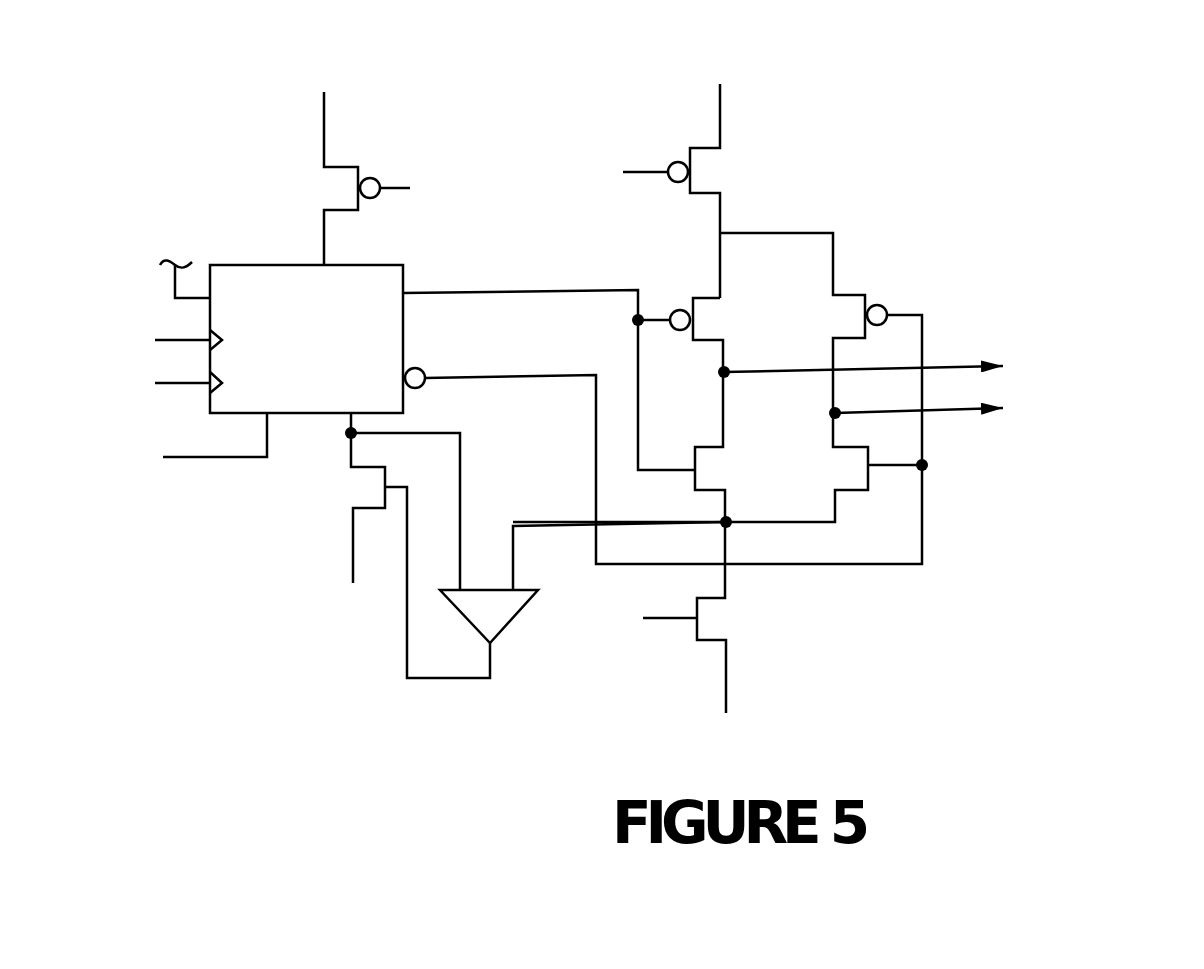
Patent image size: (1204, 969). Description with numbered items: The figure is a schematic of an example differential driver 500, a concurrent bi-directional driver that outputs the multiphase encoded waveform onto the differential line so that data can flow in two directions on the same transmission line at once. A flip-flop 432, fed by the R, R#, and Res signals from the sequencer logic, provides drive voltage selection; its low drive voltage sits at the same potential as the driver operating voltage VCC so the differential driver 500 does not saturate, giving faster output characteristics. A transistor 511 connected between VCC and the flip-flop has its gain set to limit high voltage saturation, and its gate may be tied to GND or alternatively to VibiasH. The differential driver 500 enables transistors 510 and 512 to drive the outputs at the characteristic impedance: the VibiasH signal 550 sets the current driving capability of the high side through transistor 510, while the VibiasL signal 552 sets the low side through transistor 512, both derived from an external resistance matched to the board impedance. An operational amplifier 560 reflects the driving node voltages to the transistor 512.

The differential driver 500 is at (1047, 167).
The flip-flop 432 is at (258, 265).
The transistor 511 is at (392, 192).
The transistor 510 is at (717, 168).
The VibiasH signal 550 is at (647, 173).
The transistor 512 is at (725, 618).
The VibiasL signal 552 is at (673, 625).
The operational amplifier 560 is at (507, 622).